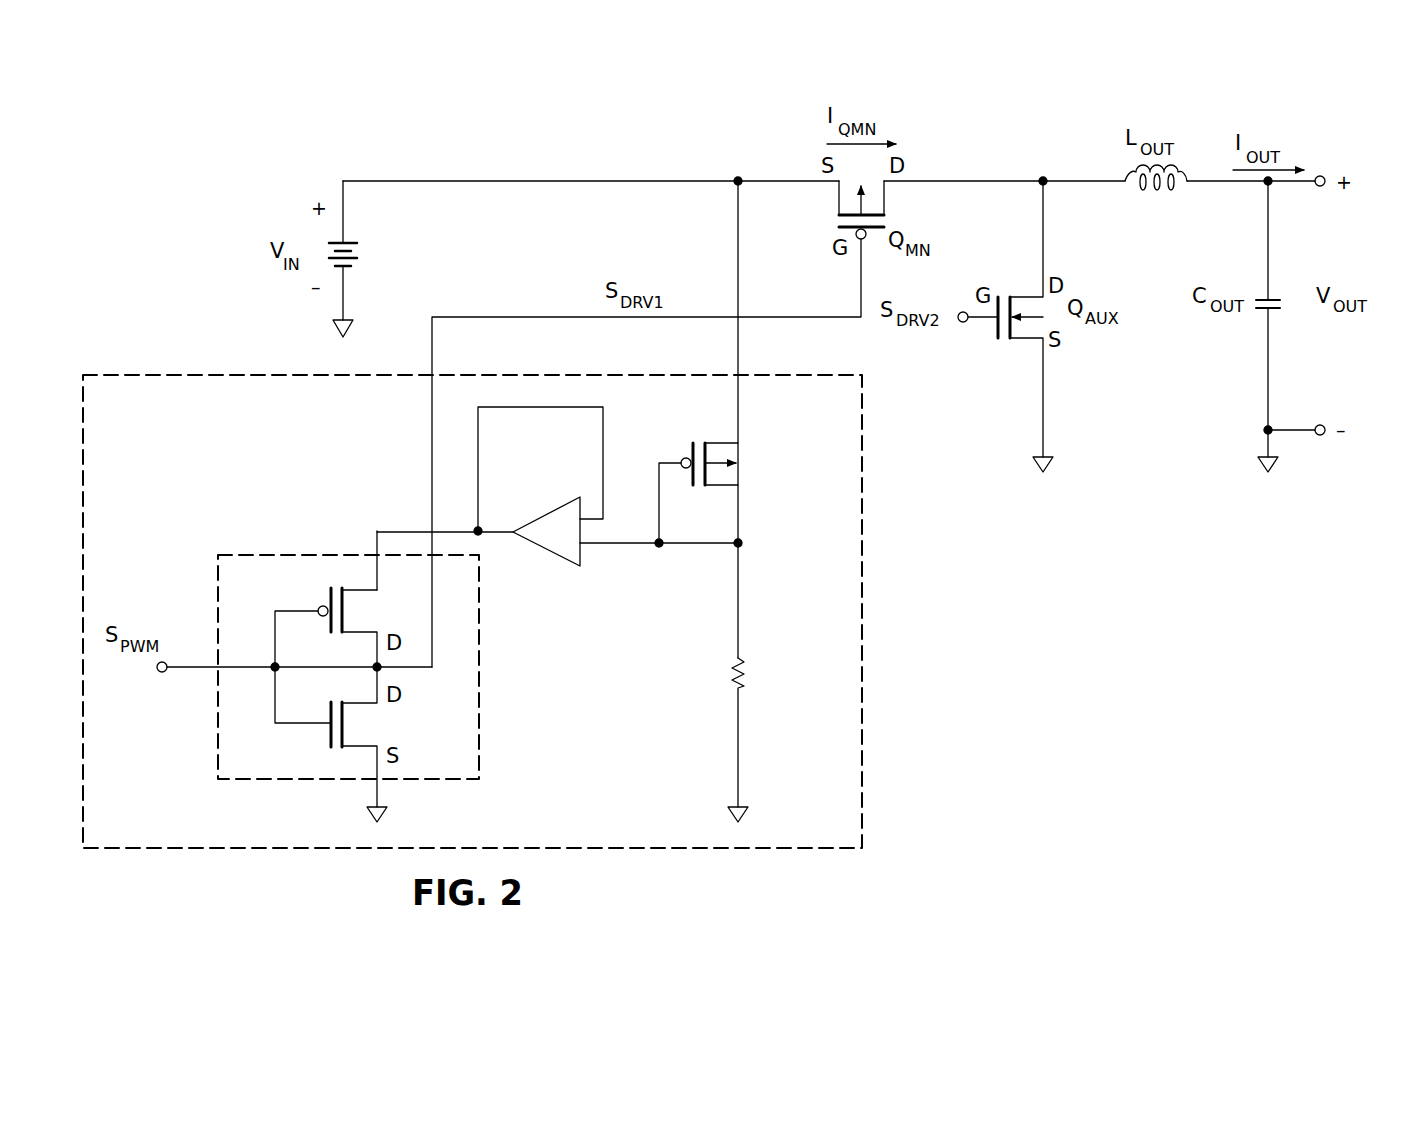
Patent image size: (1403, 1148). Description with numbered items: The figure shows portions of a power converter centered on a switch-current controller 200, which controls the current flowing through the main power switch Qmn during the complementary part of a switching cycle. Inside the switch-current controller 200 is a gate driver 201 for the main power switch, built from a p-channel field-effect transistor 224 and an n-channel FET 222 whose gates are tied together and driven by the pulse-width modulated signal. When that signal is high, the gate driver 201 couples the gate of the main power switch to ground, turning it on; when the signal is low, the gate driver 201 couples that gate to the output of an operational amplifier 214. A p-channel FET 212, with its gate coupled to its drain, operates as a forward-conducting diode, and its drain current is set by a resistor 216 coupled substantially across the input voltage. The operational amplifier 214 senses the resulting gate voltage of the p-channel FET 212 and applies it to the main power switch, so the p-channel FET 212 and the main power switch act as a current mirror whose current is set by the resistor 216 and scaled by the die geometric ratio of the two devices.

The switch-current controller 200 is at (170, 369).
The gate driver 201 is at (274, 549).
The p-channel FET 212 is at (688, 445).
The operational amplifier 214 is at (540, 514).
The resistor 216 is at (743, 676).
The n-channel FET 222 is at (326, 735).
The p-channel field-effect transistor 224 is at (326, 600).